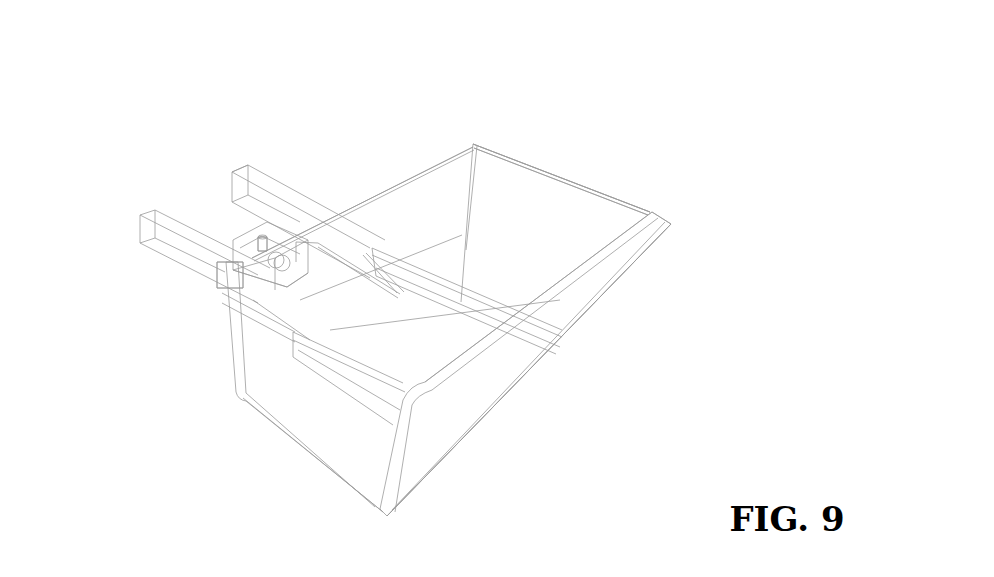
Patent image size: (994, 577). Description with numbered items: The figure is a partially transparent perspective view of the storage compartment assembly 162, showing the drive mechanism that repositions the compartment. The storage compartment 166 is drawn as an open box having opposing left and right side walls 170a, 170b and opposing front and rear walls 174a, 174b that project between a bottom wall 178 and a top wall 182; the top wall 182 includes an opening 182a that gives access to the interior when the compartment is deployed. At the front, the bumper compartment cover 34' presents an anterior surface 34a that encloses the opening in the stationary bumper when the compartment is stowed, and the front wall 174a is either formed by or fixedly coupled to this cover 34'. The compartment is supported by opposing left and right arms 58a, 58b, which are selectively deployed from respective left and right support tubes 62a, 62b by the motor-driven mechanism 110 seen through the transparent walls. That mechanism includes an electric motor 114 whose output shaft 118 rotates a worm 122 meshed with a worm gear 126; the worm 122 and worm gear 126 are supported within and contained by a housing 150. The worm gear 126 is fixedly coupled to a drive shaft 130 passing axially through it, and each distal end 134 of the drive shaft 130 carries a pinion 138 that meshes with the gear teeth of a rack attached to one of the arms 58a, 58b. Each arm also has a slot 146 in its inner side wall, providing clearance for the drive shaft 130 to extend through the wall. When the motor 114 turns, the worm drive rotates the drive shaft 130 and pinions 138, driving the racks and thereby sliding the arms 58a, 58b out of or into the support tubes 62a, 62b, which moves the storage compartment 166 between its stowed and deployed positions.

The motor-driven mechanism 110 is at (215, 186).
The electric motor 114 is at (253, 263).
The output shaft 118 is at (261, 236).
The worm 122 is at (261, 236).
The worm gear 126 is at (278, 248).
The drive shaft 130 is at (300, 247).
The distal end 134 is at (222, 292).
The pinion 138 is at (320, 245).
The slot 146 is at (397, 288).
The housing 150 is at (247, 230).
The storage compartment assembly 162 is at (653, 90).
The storage compartment 166 is at (541, 199).
The left side wall 170a is at (237, 374).
The right side wall 170b is at (520, 193).
The front wall 174a is at (460, 376).
The rear wall 174b is at (432, 186).
The bottom wall 178 is at (344, 446).
The top wall 182 is at (608, 205).
The opening 182a is at (581, 208).
The bumper compartment cover 34' is at (579, 364).
The anterior surface 34a is at (598, 337).
The left arm 58a is at (350, 378).
The right arm 58b is at (460, 302).
The left support tube 62a is at (147, 249).
The right support tube 62b is at (276, 180).